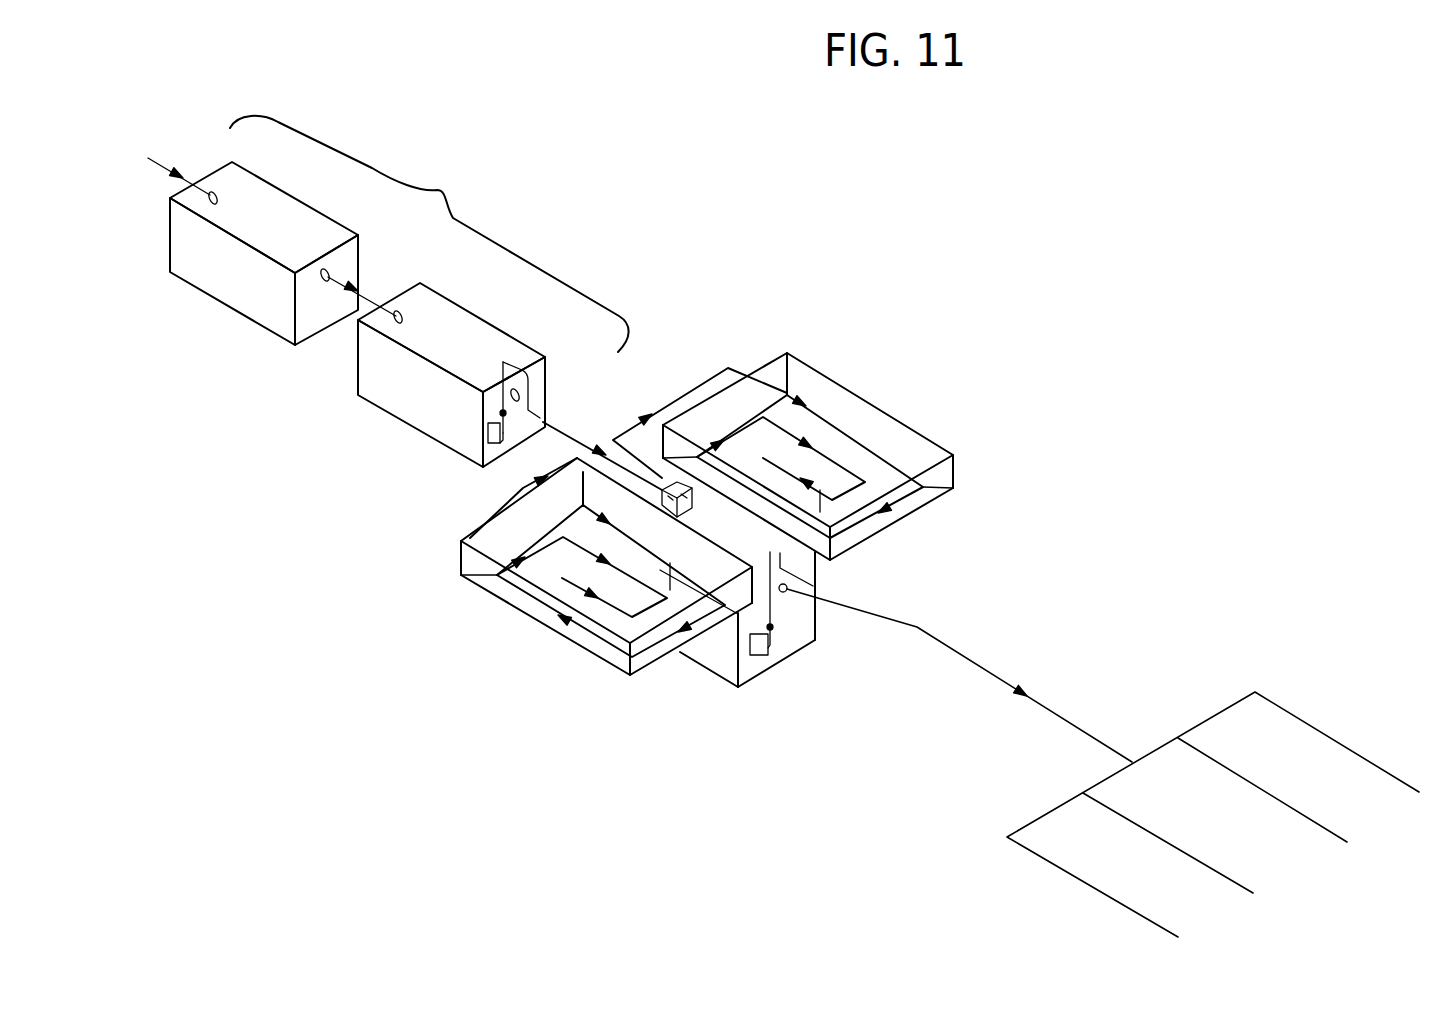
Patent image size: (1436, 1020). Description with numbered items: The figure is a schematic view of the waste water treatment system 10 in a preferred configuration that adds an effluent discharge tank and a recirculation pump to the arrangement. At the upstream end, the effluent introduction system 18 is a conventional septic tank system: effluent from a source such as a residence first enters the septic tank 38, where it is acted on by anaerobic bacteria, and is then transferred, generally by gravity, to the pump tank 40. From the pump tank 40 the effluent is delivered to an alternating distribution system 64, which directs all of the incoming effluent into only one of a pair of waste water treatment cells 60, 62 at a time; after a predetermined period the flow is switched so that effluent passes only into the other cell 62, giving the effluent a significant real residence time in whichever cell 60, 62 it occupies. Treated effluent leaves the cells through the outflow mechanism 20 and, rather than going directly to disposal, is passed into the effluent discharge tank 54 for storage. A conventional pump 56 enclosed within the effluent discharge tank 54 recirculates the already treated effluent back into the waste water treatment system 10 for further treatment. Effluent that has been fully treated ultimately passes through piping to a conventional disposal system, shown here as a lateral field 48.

The waste water treatment system 10 is at (1112, 353).
The effluent introduction system 18 is at (450, 182).
The outflow mechanism 20 is at (955, 650).
The septic tank 38 is at (247, 293).
The pump tank 40 is at (403, 398).
The lateral field 48 is at (1259, 662).
The effluent discharge tank 54 is at (800, 625).
The pump 56 is at (753, 657).
The waste water treatment cell 60 is at (592, 640).
The waste water treatment cell 62 is at (913, 447).
The alternating distribution system 64 is at (670, 488).